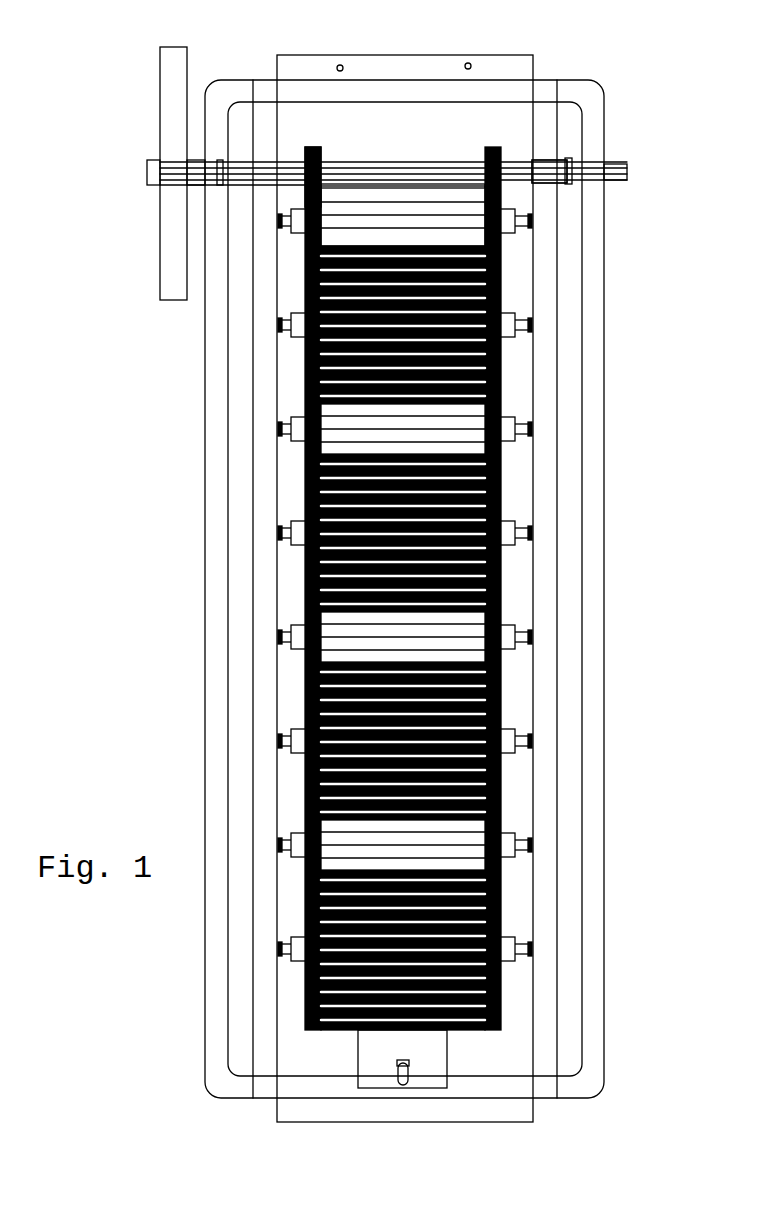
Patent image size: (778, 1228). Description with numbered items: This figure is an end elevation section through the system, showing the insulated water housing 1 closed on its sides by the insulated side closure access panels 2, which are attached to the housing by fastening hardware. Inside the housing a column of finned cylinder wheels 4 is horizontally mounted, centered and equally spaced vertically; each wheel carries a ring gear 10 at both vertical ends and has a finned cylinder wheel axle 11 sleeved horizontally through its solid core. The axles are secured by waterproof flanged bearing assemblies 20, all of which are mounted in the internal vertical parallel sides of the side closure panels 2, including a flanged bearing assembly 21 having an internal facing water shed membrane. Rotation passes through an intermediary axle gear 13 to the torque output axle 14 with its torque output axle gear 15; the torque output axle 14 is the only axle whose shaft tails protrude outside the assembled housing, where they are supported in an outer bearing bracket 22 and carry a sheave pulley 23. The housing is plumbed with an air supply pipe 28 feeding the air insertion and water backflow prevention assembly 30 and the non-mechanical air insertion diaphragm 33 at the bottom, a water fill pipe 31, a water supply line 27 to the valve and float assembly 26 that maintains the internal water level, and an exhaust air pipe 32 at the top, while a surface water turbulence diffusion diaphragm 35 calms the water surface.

The insulated water housing 1 is at (375, 1065).
The insulated side closure access panels 2 is at (590, 399).
The finned cylinder wheel 4 is at (500, 278).
The ring gear 10 is at (321, 480).
The finned cylinder wheel axle 11 is at (516, 637).
The intermediary axle gear 13 is at (192, 588).
The torque output axle 14 is at (618, 164).
The torque output axle gear 15 is at (312, 147).
The flanged bearing assembly 20 is at (147, 172).
The flanged bearing assembly having internal facing water shed membrane 21 is at (532, 180).
The outer bearing bracket 22 is at (197, 160).
The sheave pulley 23 is at (160, 95).
The valve and float assembly 26 is at (403, 100).
The water supply line 27 is at (403, 185).
The air supply pipe 28 is at (403, 1085).
The air insertion and water backflow prevention assembly 30 is at (409, 1063).
The water fill pipe 31 is at (340, 65).
The exhaust air pipe 32 is at (468, 63).
The air insertion diaphragm 33 is at (308, 1107).
The surface water turbulence diffusion diaphragm 35 is at (563, 170).